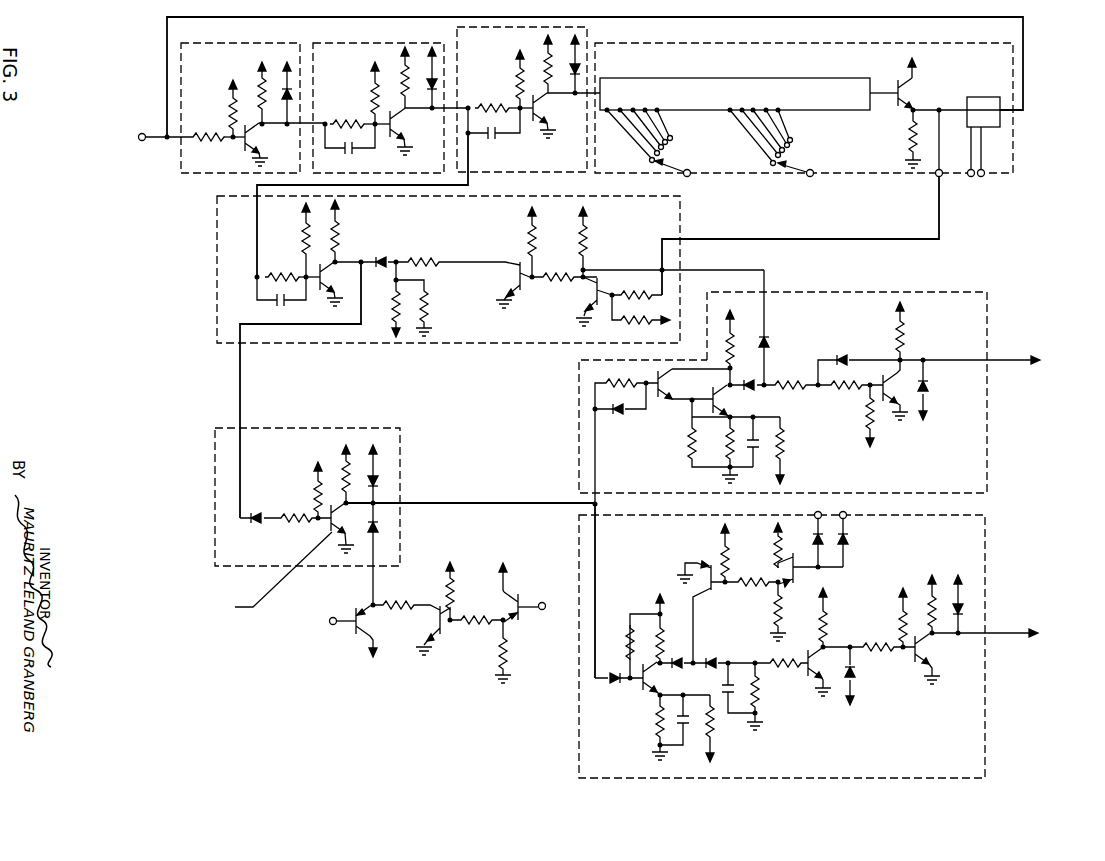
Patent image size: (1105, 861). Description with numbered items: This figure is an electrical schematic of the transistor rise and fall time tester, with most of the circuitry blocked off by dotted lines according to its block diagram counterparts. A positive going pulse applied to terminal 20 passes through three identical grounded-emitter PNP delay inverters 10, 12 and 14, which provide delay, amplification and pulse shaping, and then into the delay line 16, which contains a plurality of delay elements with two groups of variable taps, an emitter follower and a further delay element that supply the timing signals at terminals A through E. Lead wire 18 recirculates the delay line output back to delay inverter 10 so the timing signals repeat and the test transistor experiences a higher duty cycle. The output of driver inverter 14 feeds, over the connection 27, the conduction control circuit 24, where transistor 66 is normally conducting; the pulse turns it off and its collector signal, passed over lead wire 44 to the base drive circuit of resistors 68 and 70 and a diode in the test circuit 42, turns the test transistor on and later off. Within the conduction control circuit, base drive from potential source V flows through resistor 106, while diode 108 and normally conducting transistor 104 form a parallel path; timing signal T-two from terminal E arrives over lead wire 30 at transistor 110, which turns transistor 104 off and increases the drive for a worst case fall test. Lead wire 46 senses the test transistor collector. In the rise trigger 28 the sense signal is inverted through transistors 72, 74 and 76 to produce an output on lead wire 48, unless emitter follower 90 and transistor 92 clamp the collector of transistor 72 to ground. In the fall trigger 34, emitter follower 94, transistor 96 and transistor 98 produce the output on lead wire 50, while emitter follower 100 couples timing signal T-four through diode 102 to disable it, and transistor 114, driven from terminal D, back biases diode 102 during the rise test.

The delay inverter 10 is at (213, 108).
The delay inverter 12 is at (353, 43).
The driver inverter 14 is at (455, 30).
The delay line 16 is at (1013, 163).
The lead wire 18 is at (1025, 98).
The terminal 20 is at (138, 137).
The conduction control circuit 24 is at (217, 278).
The connecting line 27 is at (257, 190).
The rise trigger 28 is at (985, 757).
The lead wire 30 is at (939, 225).
The fall trigger 34 is at (987, 468).
The test circuit 42 is at (215, 478).
The lead wire 44 is at (240, 400).
The lead wire 46 is at (467, 503).
The lead wire 48 is at (1000, 632).
The lead wire 50 is at (997, 360).
The transistor 66 is at (325, 291).
The resistor 68 is at (313, 484).
The resistor 70 is at (284, 524).
The transistor 72 is at (646, 695).
The transistor 74 is at (808, 680).
The transistor 76 is at (917, 668).
The transistor 90 is at (793, 583).
The transistor 92 is at (712, 596).
The transistor 94 is at (661, 396).
The transistor 96 is at (722, 391).
The transistor 98 is at (883, 375).
The transistor 100 is at (357, 637).
The diode 102 is at (378, 530).
The transistor 104 is at (512, 270).
The resistor 106 is at (342, 238).
The diode 108 is at (386, 258).
The transistor 110 is at (592, 286).
The transistor 114 is at (520, 620).